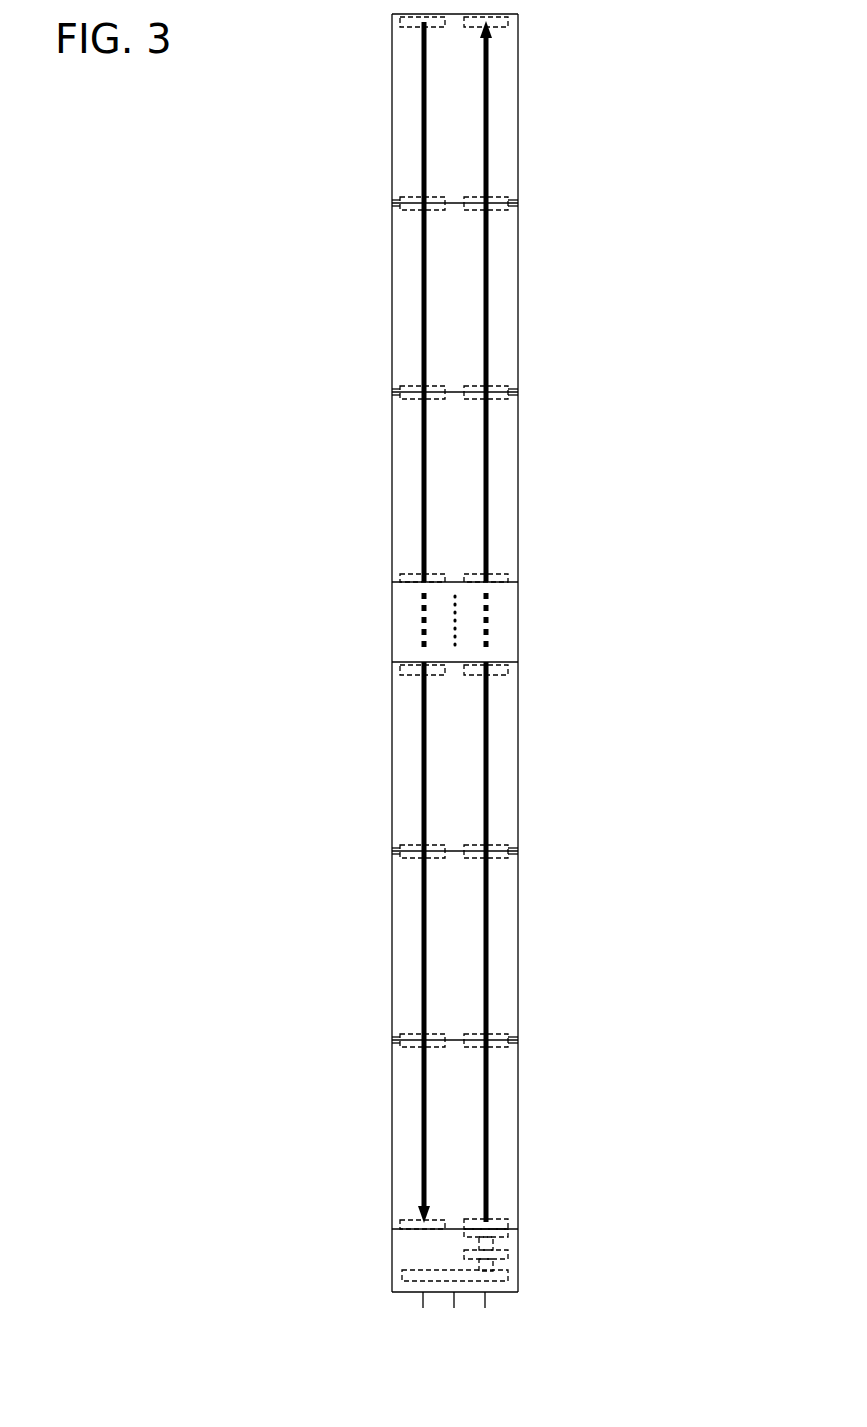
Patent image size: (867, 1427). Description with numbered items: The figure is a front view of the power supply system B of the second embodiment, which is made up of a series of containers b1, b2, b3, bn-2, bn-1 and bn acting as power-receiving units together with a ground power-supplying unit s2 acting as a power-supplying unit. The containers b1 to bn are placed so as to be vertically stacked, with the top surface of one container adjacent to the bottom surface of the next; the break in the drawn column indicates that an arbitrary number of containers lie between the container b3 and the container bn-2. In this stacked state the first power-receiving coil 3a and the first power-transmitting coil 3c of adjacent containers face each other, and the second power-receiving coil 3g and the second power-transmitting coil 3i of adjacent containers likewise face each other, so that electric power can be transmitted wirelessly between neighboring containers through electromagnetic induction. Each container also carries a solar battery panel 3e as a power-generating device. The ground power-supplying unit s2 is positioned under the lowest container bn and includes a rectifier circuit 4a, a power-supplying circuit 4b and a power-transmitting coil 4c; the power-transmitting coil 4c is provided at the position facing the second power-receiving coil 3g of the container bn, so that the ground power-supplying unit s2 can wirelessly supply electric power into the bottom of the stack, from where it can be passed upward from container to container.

The first power-receiving coil 3a is at (398, 19).
The first power-transmitting coil 3c is at (400, 197).
The solar battery panel 3e is at (450, 28).
The second power-receiving coil 3g is at (508, 197).
The second power-transmitting coil 3i is at (518, 17).
The container b1 is at (518, 112).
The container b2 is at (518, 302).
The container b3 is at (518, 492).
The container bn-2 is at (518, 759).
The container bn-1 is at (518, 949).
The container bn is at (518, 1138).
The rectifier circuit 4a is at (518, 1276).
The power-supplying circuit 4b is at (518, 1256).
The power-transmitting coil 4c is at (518, 1233).
The ground power-supplying unit s2 is at (518, 1247).
The power supply system B is at (680, 76).